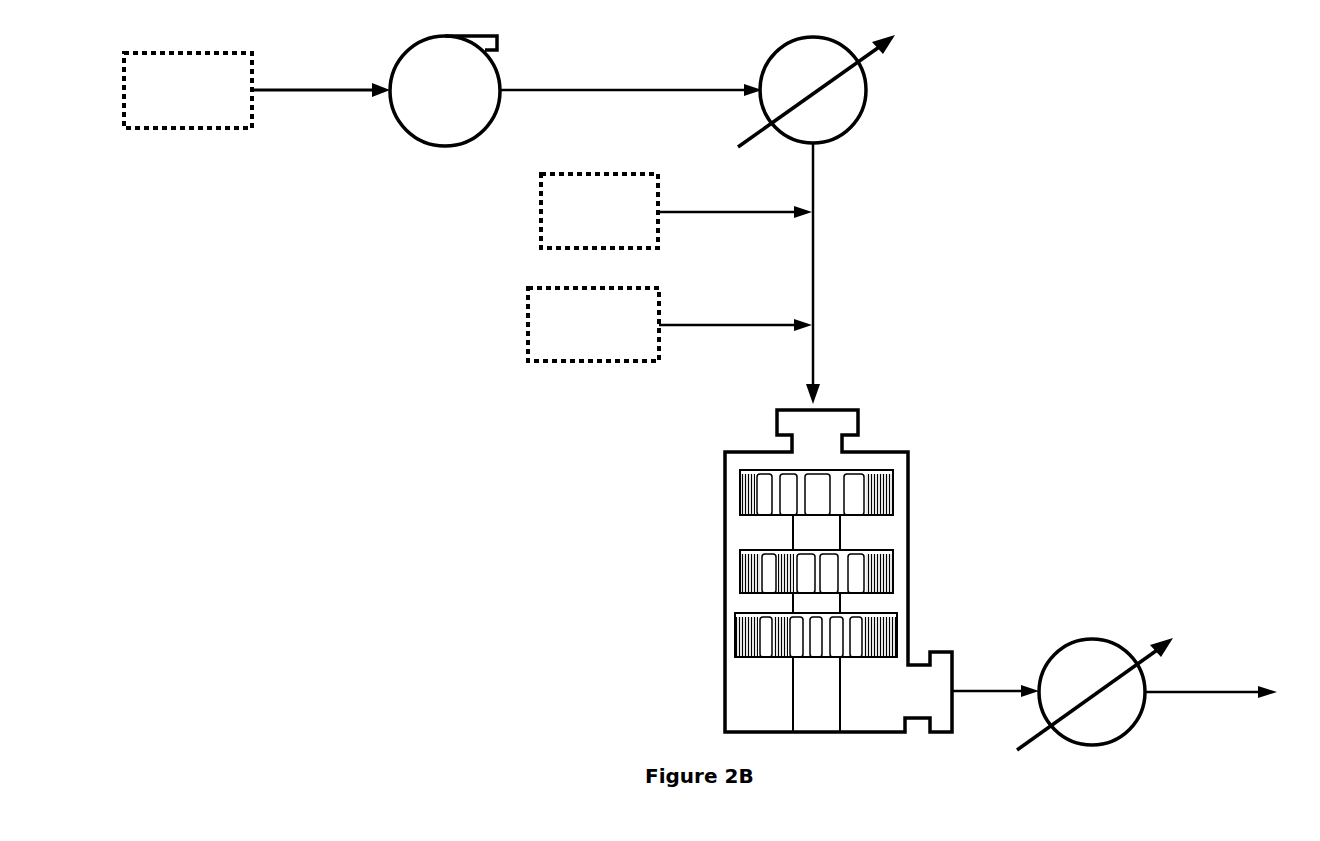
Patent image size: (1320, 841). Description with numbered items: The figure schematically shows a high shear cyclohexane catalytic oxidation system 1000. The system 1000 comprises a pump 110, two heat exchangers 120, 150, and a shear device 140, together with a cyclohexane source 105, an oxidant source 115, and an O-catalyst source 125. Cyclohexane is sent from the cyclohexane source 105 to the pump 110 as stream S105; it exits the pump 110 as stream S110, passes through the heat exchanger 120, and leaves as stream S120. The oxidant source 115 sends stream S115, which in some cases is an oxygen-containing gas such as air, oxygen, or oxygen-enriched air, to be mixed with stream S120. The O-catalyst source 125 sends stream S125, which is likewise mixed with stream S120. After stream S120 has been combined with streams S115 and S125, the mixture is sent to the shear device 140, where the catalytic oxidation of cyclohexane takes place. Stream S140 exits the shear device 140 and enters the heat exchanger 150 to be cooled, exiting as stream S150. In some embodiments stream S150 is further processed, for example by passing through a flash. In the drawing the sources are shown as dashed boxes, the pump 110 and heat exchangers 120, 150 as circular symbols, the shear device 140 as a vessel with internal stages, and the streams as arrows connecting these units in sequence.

The cyclohexane source 105 is at (188, 90).
The stream S105 is at (321, 70).
The pump 110 is at (476, 106).
The stream S110 is at (631, 69).
The heat exchanger 120 is at (850, 31).
The stream S120 is at (867, 273).
The oxidant source 115 is at (599, 211).
The stream S115 is at (735, 195).
The O-catalyst source 125 is at (593, 324).
The stream S125 is at (735, 308).
The shear device 140 is at (985, 420).
The stream S140 is at (1005, 670).
The heat exchanger 150 is at (1126, 633).
The stream S150 is at (1212, 674).
The cyclohexane catalytic oxidation system 1000 is at (1055, 131).